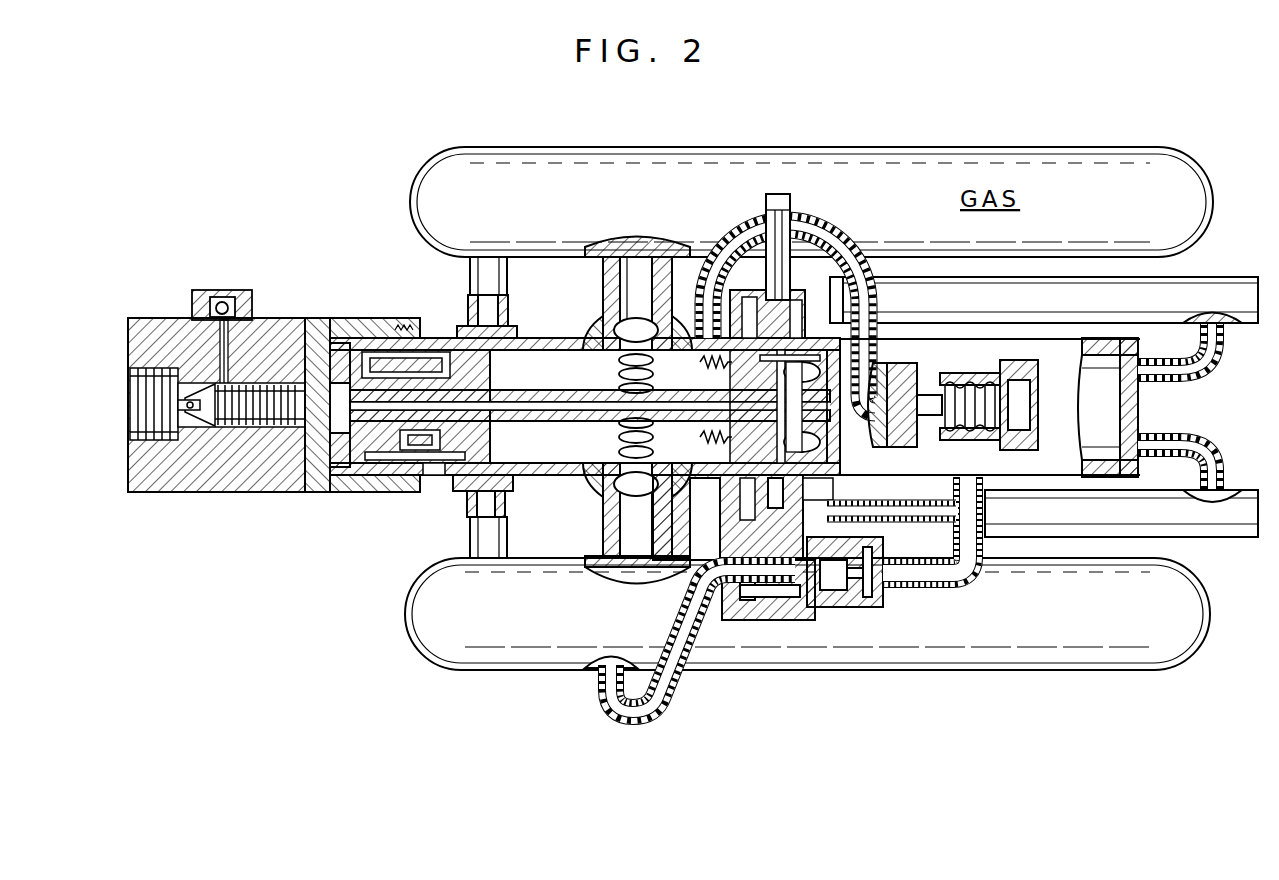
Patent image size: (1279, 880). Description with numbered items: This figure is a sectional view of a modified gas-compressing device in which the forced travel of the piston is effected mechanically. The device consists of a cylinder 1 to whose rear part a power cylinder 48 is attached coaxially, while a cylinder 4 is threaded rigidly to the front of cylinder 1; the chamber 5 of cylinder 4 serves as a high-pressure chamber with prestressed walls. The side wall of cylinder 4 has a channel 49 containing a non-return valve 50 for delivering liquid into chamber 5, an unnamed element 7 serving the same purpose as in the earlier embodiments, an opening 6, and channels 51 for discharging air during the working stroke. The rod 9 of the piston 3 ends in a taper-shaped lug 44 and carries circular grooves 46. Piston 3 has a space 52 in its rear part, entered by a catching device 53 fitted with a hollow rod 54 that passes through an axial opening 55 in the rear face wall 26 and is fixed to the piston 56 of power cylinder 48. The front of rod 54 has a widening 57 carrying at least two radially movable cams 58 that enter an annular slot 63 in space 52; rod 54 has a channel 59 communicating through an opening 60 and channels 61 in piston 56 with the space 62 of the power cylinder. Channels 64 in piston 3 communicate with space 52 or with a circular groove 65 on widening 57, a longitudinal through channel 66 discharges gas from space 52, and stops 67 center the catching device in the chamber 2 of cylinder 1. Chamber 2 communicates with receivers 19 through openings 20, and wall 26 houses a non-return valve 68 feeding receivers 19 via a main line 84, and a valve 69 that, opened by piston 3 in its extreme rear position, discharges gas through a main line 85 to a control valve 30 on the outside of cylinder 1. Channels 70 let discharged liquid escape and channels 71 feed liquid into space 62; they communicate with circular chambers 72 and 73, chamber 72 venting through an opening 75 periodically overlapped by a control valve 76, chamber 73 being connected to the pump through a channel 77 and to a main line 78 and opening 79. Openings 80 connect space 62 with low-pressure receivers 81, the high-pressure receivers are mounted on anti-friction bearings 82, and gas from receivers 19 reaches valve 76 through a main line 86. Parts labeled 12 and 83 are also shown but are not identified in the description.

The cylinder 1 is at (522, 345).
The chamber 2 is at (515, 475).
The piston 3 is at (383, 345).
The cylinder 4 is at (163, 318).
The chamber 5 is at (338, 380).
The opening 6 is at (200, 430).
The unnamed element 7 is at (130, 392).
The rod 9 is at (290, 430).
The end cap 12 is at (822, 440).
The receivers 19 is at (1082, 665).
The openings 20 is at (600, 492).
The rear face wall 26 is at (750, 338).
The control valve 30 is at (976, 376).
The taper-shaped lug 44 is at (190, 425).
The circular grooves 46 is at (235, 440).
The power cylinder 48 is at (1102, 422).
The channel 49 is at (262, 332).
The non-return valve 50 is at (225, 300).
The channels 51 is at (312, 492).
The space 52 is at (370, 458).
The catching device 53 is at (360, 370).
The hollow rod 54 is at (492, 421).
The axial opening 55 is at (700, 437).
The piston 56 is at (818, 425).
The widening 57 is at (492, 350).
The cams 58 is at (390, 360).
The channel 59 is at (518, 404).
The opening 60 is at (792, 325).
The channels 61 is at (872, 380).
The space 62 is at (800, 356).
The annular slot 63 is at (410, 445).
The channels 64 is at (445, 340).
The circular groove 65 is at (430, 450).
The longitudinal through channel 66 is at (432, 476).
The stops 67 is at (522, 338).
The non-return valve 68 is at (619, 440).
The valve 69 is at (700, 362).
The channels 70 is at (740, 508).
The channels 71 is at (802, 310).
The circular chamber 72 is at (662, 515).
The circular chamber 73 is at (760, 617).
The opening 75 is at (728, 600).
The control valve 76 is at (832, 607).
The channel 77 is at (790, 225).
The main line 78 is at (948, 588).
The opening 79 is at (828, 482).
The openings 80 is at (1150, 383).
The receivers 81 is at (1240, 300).
The anti-friction bearings 82 is at (470, 505).
The lower hose 83 is at (968, 572).
The main line 84 is at (672, 574).
The main line 85 is at (850, 250).
The main line 86 is at (604, 705).